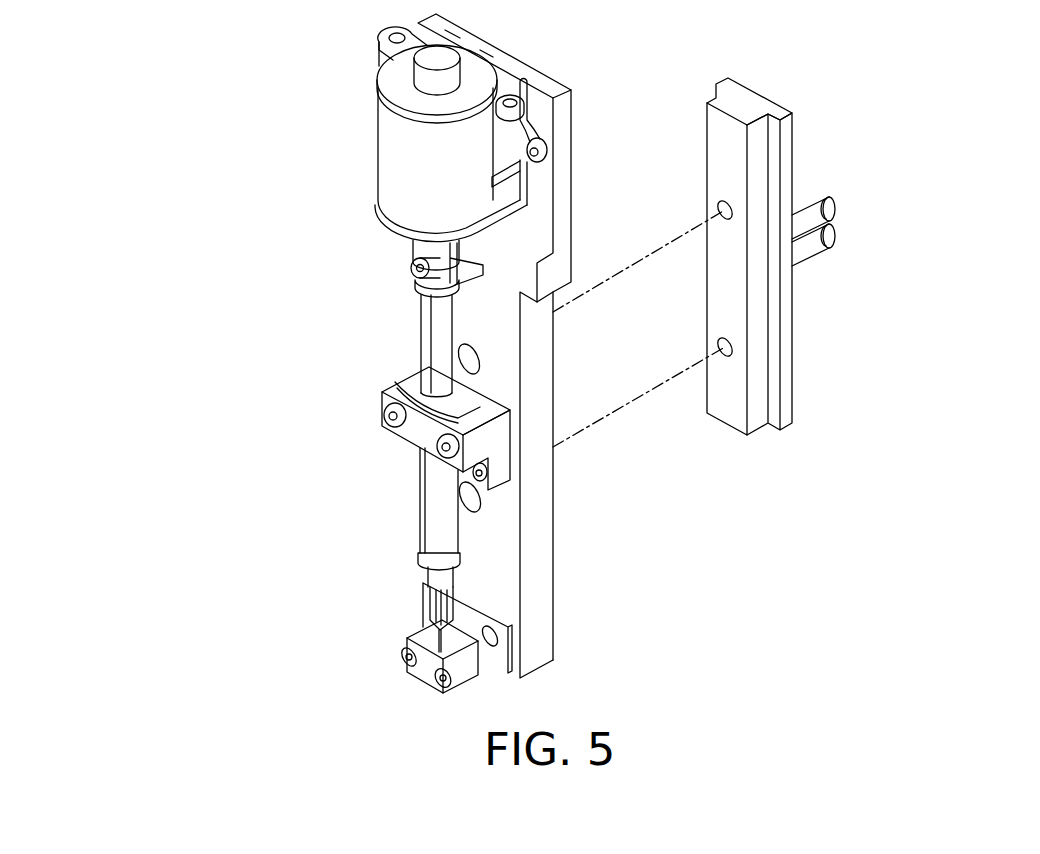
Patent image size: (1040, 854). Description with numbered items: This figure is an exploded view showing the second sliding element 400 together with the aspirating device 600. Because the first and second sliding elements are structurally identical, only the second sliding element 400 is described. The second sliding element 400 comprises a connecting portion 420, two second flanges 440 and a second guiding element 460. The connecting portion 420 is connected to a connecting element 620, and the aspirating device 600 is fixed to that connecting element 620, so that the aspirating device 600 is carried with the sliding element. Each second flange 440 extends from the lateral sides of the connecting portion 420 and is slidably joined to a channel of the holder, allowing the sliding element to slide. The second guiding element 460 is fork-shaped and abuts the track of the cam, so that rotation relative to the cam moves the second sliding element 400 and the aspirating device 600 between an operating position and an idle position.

The second sliding element 400 is at (785, 261).
The connecting portion 420 is at (733, 290).
The second flange 440 is at (788, 390).
The second guiding element 460 is at (823, 208).
The aspirating device 600 is at (397, 160).
The connecting element 620 is at (535, 571).